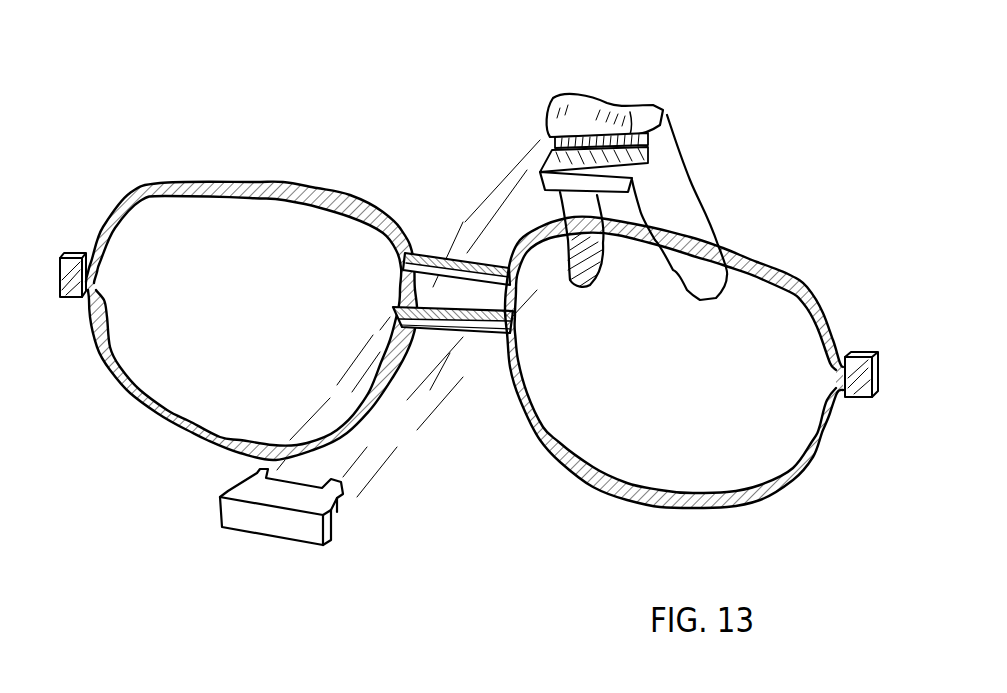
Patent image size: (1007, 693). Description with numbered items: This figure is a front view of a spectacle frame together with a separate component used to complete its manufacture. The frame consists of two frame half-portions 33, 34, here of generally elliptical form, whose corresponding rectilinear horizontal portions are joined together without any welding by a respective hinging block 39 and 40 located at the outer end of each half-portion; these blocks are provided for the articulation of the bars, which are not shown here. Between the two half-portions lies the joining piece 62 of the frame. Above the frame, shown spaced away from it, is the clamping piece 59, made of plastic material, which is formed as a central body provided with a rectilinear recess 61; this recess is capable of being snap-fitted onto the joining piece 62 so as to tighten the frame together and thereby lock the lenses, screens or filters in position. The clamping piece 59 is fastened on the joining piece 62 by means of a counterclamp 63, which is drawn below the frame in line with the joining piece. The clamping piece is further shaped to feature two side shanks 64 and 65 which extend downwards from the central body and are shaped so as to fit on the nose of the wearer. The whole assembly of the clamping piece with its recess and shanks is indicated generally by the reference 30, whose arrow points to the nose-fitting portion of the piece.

The nose pad assembly 30 is at (620, 210).
The frame half-portion 33 is at (233, 175).
The frame half-portion 34 is at (620, 500).
The hinging block 39 is at (72, 258).
The hinging block 40 is at (862, 355).
The clamping piece 59 is at (612, 108).
The rectilinear recess 61 is at (550, 157).
The joining piece 62 is at (480, 335).
The counterclamp 63 is at (270, 523).
The side shank 64 is at (590, 280).
The side shank 65 is at (708, 287).